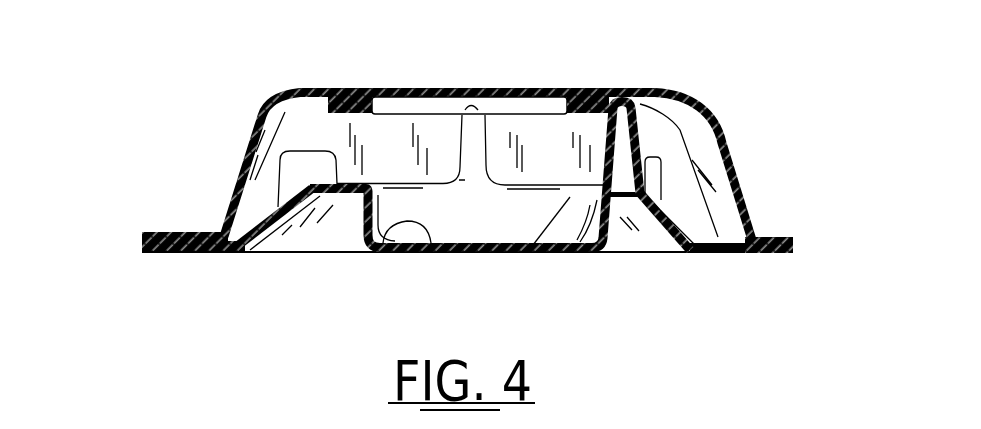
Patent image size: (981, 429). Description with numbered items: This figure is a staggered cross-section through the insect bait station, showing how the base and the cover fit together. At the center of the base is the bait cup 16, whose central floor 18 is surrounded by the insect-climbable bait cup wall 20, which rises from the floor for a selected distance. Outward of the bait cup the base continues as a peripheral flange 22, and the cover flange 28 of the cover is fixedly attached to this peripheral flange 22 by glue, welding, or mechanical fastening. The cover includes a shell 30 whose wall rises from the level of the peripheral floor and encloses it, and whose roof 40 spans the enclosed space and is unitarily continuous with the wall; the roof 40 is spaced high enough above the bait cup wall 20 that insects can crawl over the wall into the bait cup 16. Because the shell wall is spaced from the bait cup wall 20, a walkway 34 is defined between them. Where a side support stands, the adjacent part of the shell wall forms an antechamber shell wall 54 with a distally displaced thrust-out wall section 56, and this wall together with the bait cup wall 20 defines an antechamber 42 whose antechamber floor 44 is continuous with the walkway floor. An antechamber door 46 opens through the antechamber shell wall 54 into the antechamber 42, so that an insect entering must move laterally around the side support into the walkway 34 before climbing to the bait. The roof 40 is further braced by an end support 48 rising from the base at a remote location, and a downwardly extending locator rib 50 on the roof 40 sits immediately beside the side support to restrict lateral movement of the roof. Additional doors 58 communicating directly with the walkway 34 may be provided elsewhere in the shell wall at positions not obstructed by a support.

The bait cup 16 is at (425, 243).
The central floor 18 is at (505, 241).
The bait cup wall 20 is at (535, 243).
The peripheral flange 22 is at (167, 253).
The cover flange 28 is at (160, 232).
The shell 30 is at (680, 102).
The walkway 34 is at (250, 203).
The roof 40 is at (437, 90).
The antechamber 42 is at (703, 150).
The antechamber floor 44 is at (714, 240).
The antechamber door 46 is at (663, 247).
The end support 48 is at (485, 120).
The locator rib 50 is at (353, 98).
The antechamber shell wall 54 is at (663, 243).
The thrust-out wall section 56 is at (720, 230).
The additional doors 58 is at (305, 150).